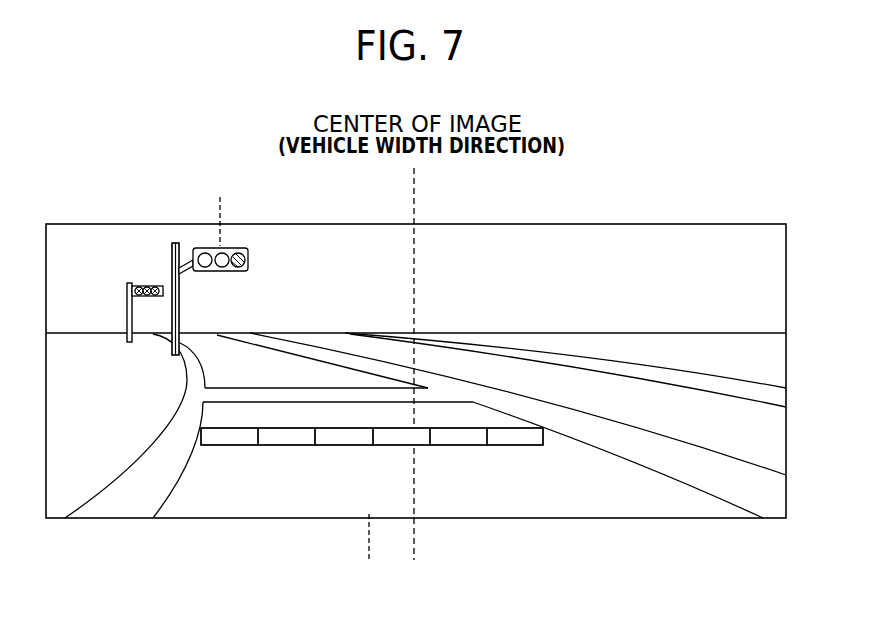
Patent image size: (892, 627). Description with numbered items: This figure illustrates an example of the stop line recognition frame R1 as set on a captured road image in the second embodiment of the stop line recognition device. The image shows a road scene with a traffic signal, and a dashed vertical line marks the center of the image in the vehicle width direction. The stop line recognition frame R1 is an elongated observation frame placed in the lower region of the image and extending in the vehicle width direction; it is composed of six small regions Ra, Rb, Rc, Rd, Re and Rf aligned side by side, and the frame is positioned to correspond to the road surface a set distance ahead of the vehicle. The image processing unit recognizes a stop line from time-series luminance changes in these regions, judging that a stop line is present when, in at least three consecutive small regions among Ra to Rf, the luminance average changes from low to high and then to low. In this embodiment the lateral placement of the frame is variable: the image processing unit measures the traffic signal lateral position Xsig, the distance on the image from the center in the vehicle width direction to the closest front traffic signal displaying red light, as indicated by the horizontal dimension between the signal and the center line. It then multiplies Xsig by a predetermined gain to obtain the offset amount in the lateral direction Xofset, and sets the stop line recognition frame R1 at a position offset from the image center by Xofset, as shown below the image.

The small region Ra is at (232, 445).
The small region Rb is at (288, 445).
The small region Rc is at (343, 445).
The small region Rd is at (400, 445).
The small region Re is at (457, 445).
The small region Rf is at (512, 445).
The stop line recognition frame R1 is at (542, 477).
The traffic signal lateral position Xsig is at (414, 207).
The offset amount in the lateral direction Xofset is at (414, 555).